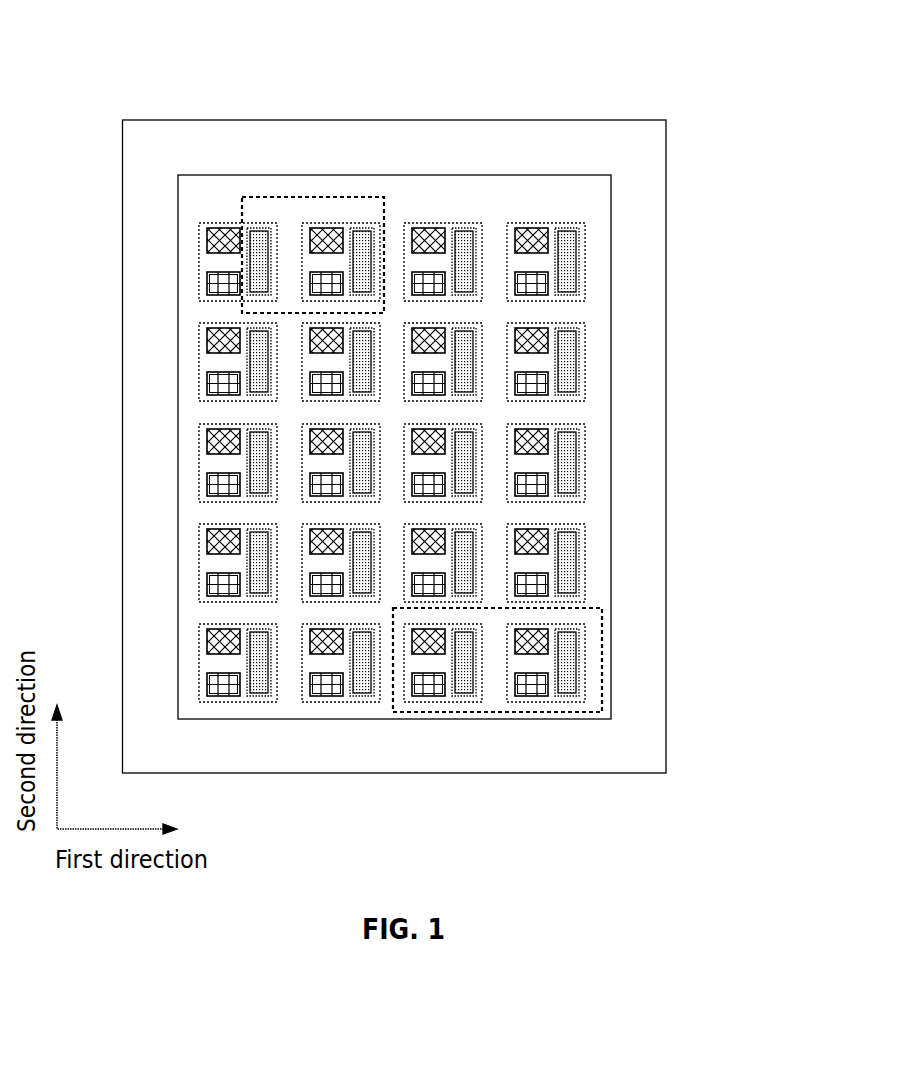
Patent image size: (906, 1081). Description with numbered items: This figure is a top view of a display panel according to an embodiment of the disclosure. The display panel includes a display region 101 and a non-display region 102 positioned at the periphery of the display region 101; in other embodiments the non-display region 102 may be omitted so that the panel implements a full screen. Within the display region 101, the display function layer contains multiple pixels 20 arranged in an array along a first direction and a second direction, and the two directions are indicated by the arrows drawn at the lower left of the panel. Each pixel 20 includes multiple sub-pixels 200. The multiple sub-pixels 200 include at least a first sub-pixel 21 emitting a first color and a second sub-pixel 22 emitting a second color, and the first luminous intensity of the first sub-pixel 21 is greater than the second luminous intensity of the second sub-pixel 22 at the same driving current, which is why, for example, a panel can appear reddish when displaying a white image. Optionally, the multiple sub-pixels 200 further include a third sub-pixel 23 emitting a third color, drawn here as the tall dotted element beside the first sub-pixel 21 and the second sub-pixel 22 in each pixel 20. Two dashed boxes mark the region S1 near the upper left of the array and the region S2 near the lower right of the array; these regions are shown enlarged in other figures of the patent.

The pixel 20 is at (428, 159).
The first sub-pixel 21 is at (433, 245).
The second sub-pixel 22 is at (432, 285).
The third sub-pixel 23 is at (462, 245).
The sub-pixel 200 is at (563, 276).
The display region 101 is at (597, 385).
The non-display region 102 is at (638, 495).
The region S1 is at (243, 197).
The region S2 is at (602, 648).